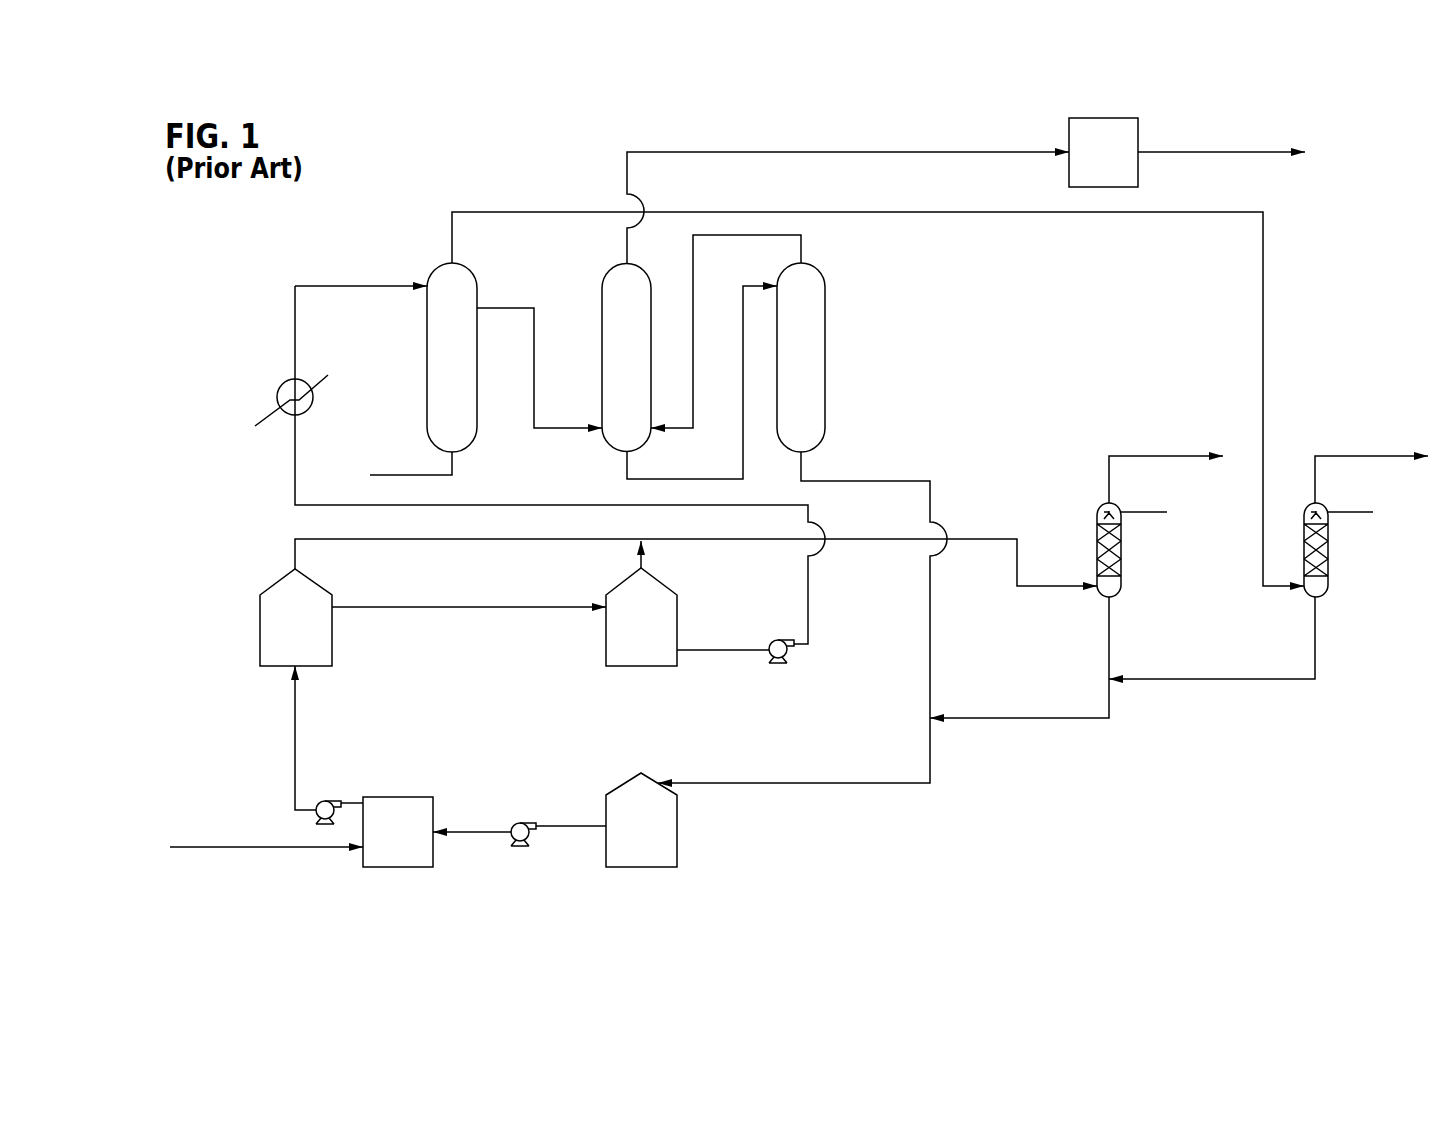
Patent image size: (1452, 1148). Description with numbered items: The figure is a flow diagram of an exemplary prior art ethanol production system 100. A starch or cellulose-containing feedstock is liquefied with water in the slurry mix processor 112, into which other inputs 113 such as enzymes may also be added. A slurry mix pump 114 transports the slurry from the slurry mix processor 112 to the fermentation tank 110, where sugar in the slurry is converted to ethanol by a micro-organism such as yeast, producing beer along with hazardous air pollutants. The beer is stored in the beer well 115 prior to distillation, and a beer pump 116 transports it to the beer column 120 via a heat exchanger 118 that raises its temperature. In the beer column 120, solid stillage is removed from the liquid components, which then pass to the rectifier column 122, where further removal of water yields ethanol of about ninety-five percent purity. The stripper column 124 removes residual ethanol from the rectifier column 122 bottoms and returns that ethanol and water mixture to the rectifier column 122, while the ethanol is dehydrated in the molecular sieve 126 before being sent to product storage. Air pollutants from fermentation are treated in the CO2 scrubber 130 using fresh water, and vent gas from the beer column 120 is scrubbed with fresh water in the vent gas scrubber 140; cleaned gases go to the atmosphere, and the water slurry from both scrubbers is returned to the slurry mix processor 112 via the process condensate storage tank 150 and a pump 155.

The ethanol production system 100 is at (415, 185).
The fermentation tank 110 is at (260, 626).
The slurry mix processor 112 is at (398, 795).
The other inputs 113 is at (277, 849).
The slurry mix pump 114 is at (327, 798).
The beer well 115 is at (606, 637).
The beer pump 116 is at (790, 653).
The heat exchanger 118 is at (286, 383).
The beer column 120 is at (466, 270).
The rectifier column 122 is at (640, 266).
The stripper column 124 is at (812, 265).
The molecular sieve 126 is at (1141, 135).
The CO2 scrubber 130 is at (1098, 508).
The vent gas scrubber 140 is at (1323, 596).
The process condensate storage tank 150 is at (677, 848).
The pump 155 is at (513, 865).